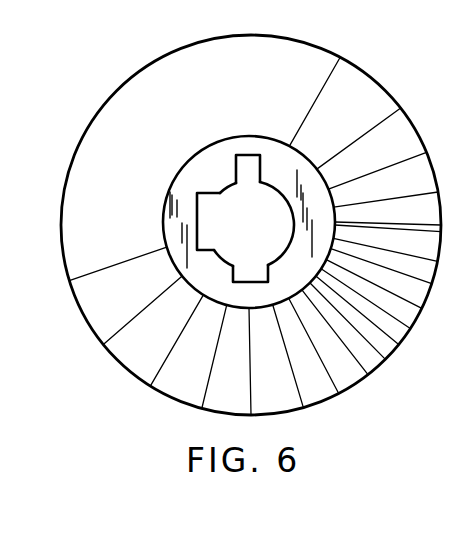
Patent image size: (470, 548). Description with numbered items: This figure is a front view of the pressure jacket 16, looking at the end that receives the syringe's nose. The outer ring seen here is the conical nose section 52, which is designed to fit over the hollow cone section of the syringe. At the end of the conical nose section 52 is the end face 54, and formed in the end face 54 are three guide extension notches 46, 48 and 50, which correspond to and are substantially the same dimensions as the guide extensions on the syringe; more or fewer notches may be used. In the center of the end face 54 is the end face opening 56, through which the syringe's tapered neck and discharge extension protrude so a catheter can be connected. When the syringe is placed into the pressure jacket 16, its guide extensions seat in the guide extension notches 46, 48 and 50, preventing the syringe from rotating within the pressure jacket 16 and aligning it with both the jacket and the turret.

The pressure jacket 16 is at (402, 101).
The conical nose section 52 is at (147, 78).
The end face 54 is at (187, 179).
The end face opening 56 is at (229, 201).
The guide extension notch 46 is at (253, 160).
The guide extension notch 48 is at (195, 217).
The guide extension notch 50 is at (246, 277).